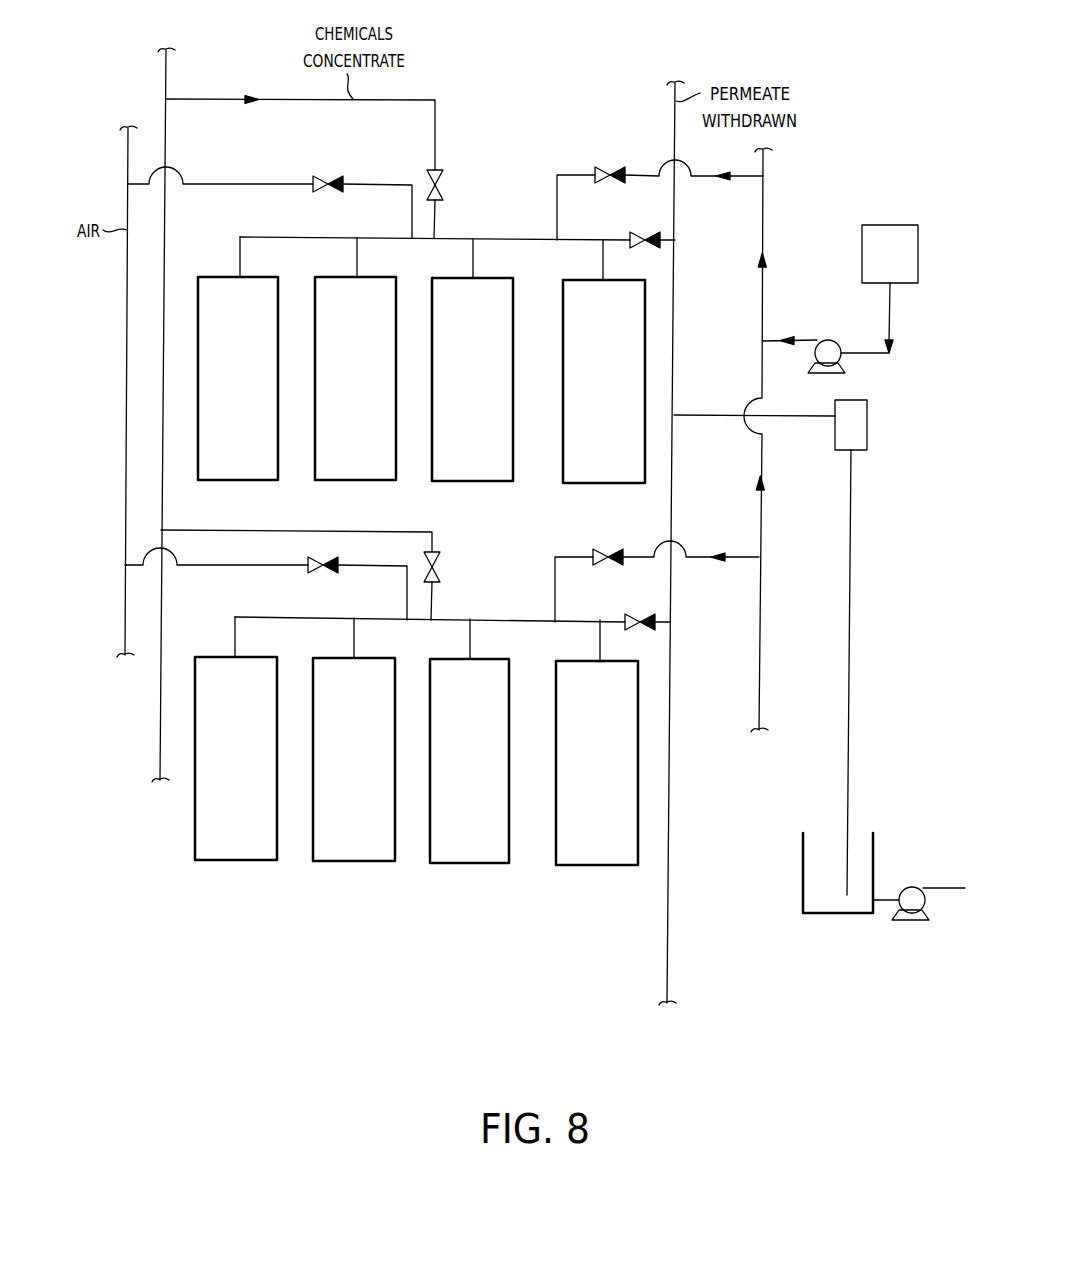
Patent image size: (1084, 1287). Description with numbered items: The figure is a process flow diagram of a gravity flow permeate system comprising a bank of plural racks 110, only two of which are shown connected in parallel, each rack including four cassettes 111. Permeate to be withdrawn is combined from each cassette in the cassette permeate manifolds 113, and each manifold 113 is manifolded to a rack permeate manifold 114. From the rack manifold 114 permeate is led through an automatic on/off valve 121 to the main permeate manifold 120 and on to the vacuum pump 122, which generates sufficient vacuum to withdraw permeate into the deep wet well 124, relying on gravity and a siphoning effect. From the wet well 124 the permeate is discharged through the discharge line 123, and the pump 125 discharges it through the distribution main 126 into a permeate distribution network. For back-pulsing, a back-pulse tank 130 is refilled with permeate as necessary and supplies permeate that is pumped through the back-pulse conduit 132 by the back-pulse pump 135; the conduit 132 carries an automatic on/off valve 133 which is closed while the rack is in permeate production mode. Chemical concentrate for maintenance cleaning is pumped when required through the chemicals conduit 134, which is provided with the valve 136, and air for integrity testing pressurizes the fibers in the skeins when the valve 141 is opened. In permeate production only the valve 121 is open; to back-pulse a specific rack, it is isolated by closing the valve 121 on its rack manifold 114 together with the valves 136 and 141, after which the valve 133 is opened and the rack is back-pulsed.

The rack 110 is at (420, 615).
The cassette 111 is at (225, 399).
The cassette permeate manifold (CPM) 113 is at (241, 263).
The rack permeate manifold (RPM) 114 is at (448, 237).
The main permeate manifold (MPM) 120 is at (673, 512).
The automatic on/off valve 121 is at (646, 232).
The vacuum pump 122 is at (868, 426).
The discharge line 123 is at (888, 899).
The wet well 124 is at (802, 848).
The pump 125 is at (897, 921).
The distribution main 126 is at (954, 887).
The back-pulse tank 130 is at (862, 252).
The back-pulse conduit 132 is at (806, 340).
The automatic on/off valve 133 is at (618, 167).
The chemicals conduit 134 is at (437, 107).
The back-pulse pump 135 is at (850, 369).
The automatic valve 136 is at (445, 181).
The automatic valve 141 is at (323, 176).